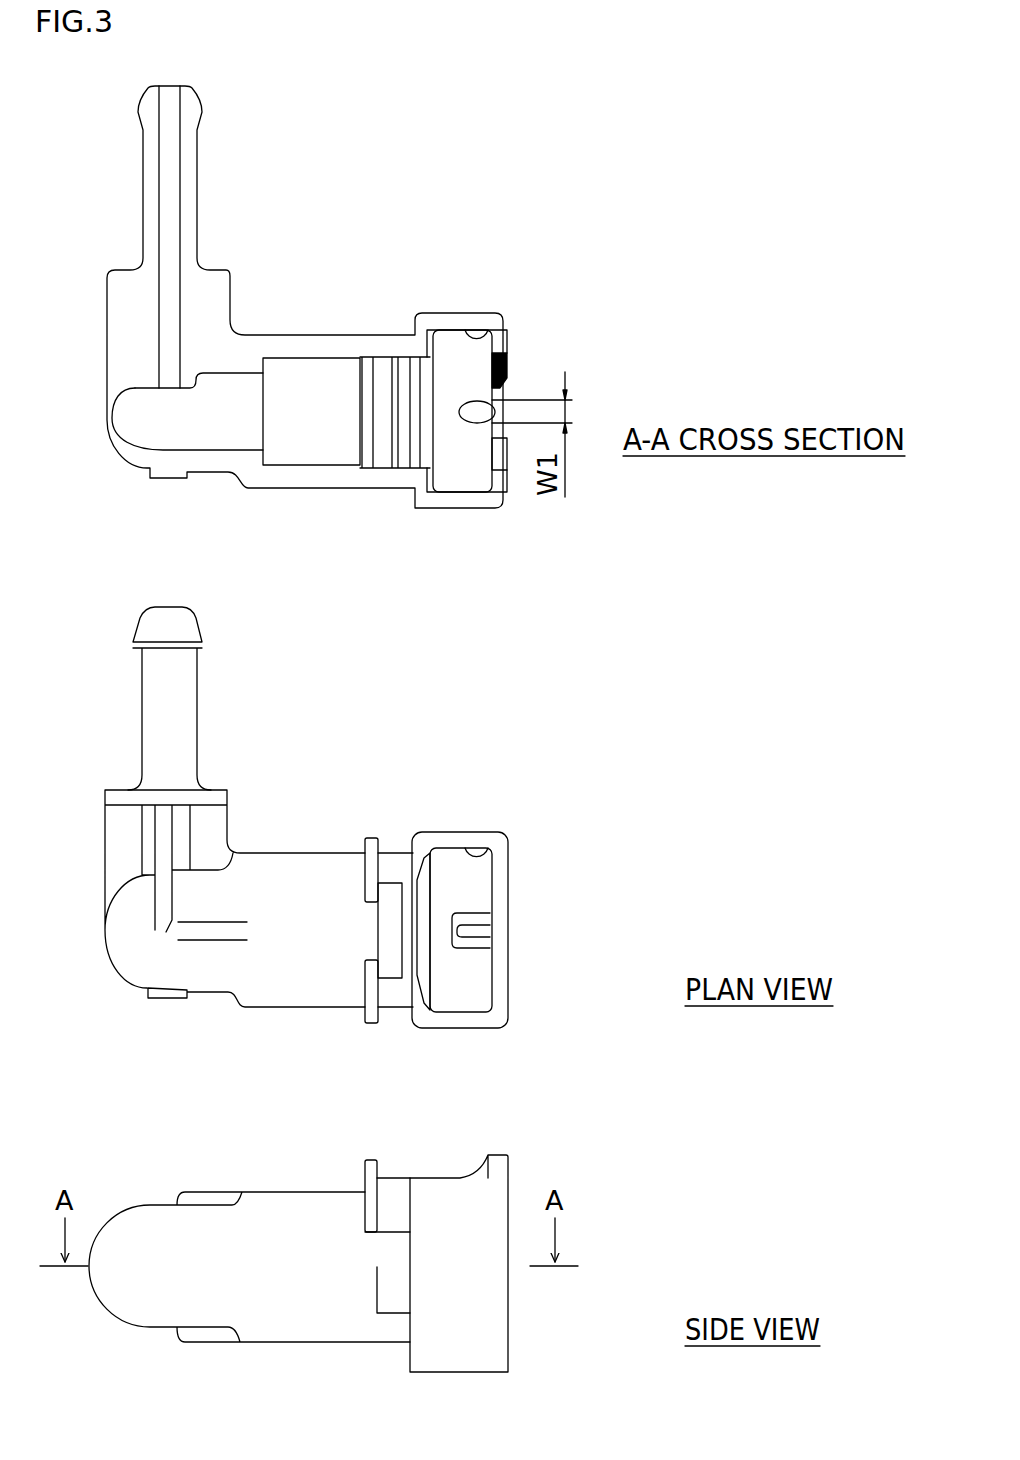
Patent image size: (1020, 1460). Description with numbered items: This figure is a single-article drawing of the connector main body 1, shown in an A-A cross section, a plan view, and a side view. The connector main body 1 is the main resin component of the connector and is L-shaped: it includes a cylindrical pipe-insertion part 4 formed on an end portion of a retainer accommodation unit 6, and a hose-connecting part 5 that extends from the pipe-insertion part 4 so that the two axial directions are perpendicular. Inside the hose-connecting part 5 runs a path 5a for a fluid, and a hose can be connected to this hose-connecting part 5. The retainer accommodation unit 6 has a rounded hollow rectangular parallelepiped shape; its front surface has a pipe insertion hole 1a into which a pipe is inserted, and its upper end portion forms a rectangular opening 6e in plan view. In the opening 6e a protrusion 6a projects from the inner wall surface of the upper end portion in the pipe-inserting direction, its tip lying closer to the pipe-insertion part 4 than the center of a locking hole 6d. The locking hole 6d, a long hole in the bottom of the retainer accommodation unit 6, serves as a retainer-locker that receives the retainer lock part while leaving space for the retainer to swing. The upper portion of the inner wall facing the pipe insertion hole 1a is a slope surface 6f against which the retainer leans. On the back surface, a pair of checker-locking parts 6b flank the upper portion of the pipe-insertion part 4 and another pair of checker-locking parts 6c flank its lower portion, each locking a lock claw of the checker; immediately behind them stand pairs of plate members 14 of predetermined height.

The connector main body 1 is at (705, 143).
The pipe insertion hole 1a is at (510, 378).
The pipe-insertion part 4 is at (328, 335).
The hose-connecting part 5 is at (143, 193).
The path 5a is at (175, 207).
The retainer accommodation unit 6 is at (462, 313).
The protrusion 6a is at (462, 913).
The checker-locking parts 6b is at (390, 850).
The checker-locking parts 6c is at (397, 1314).
The locking hole 6d is at (474, 424).
The opening 6e is at (478, 338).
The slope surface 6f is at (428, 945).
The plate members 14 is at (367, 865).